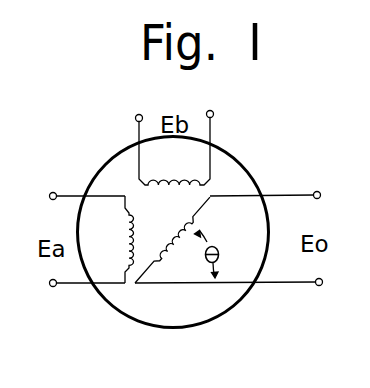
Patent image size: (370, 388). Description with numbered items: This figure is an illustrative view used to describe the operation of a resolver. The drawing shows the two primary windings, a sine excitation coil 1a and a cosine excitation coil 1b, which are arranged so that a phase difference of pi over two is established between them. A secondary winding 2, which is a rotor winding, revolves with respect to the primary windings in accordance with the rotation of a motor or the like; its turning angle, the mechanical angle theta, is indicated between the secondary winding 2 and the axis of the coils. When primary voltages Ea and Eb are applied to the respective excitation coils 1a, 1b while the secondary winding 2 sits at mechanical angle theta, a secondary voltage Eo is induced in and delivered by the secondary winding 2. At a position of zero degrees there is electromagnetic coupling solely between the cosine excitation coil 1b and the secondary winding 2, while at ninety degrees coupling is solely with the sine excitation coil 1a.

The sine excitation coil 1a is at (110, 267).
The cosine excitation coil 1b is at (196, 163).
The secondary winding 2 is at (183, 265).